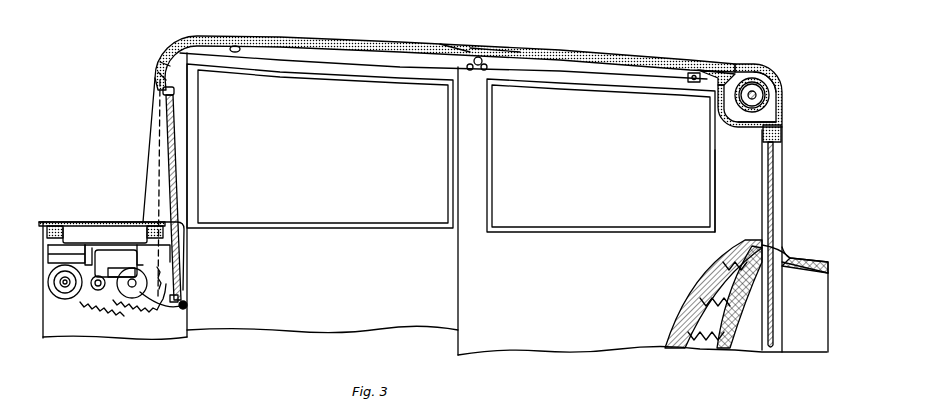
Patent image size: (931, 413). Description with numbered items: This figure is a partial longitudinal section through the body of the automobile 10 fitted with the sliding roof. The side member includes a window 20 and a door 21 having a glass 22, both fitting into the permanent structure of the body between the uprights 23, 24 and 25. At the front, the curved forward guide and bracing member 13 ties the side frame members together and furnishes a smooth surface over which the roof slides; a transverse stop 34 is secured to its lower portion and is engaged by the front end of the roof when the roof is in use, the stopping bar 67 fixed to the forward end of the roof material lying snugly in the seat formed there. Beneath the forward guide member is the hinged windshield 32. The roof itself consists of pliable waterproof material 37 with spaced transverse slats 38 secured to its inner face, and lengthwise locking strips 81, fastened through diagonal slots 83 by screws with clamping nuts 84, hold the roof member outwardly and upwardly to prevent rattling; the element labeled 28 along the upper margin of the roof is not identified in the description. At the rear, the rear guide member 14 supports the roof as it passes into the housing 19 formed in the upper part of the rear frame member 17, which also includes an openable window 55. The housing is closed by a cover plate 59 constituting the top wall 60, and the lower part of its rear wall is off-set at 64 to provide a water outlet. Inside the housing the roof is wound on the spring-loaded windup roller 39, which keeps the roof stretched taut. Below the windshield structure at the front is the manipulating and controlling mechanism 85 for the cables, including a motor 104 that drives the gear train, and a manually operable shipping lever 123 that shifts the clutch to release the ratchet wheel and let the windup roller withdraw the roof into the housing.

The automobile 10 is at (100, 210).
The forward guide and bracing member 13 is at (170, 62).
The rear guide and bracing member 14 is at (722, 87).
The rear frame member 17 is at (778, 150).
The housing 19 is at (748, 117).
The window 20 is at (601, 155).
The door 21 is at (313, 247).
The glass 22 is at (320, 146).
The upright 23 is at (152, 118).
The upright 24 is at (480, 178).
The upright 25 is at (732, 185).
The roof 28 is at (252, 40).
The windshield 32 is at (170, 151).
The transverse stop 34 is at (160, 76).
The waterproof material 37 is at (512, 35).
The slats 38 is at (453, 45).
The windup roller 39 is at (768, 99).
The window 55 is at (776, 180).
The cover plate 59 is at (777, 82).
The top wall 60 is at (763, 82).
The off-set 64 is at (781, 125).
The stopping bar 67 is at (163, 63).
The locking strips 81 is at (568, 70).
The diagonal slots 83 is at (482, 66).
The clamping nuts 84 is at (468, 68).
The manipulating and controlling mechanism 85 is at (115, 315).
The motor 104 is at (63, 294).
The shipping lever 123 is at (188, 304).